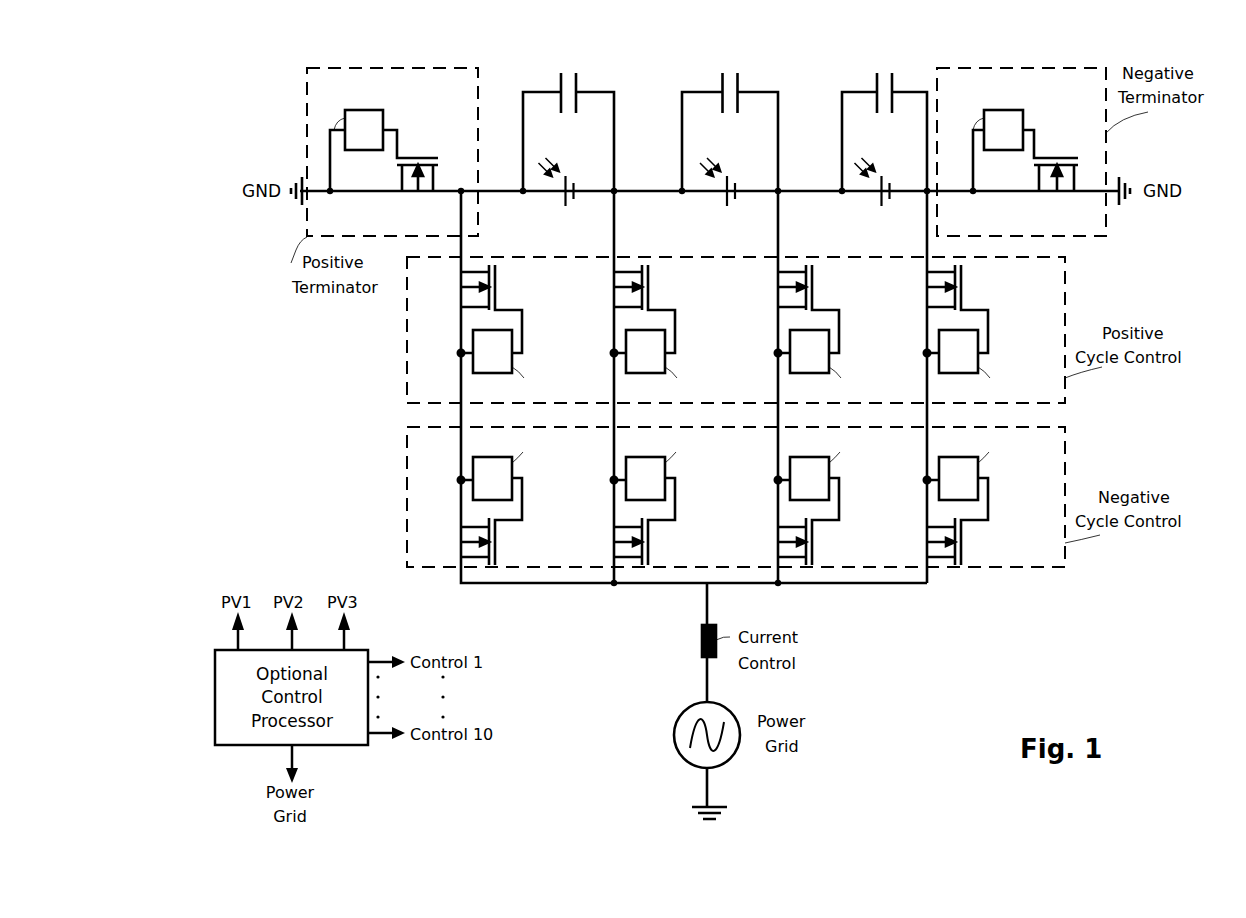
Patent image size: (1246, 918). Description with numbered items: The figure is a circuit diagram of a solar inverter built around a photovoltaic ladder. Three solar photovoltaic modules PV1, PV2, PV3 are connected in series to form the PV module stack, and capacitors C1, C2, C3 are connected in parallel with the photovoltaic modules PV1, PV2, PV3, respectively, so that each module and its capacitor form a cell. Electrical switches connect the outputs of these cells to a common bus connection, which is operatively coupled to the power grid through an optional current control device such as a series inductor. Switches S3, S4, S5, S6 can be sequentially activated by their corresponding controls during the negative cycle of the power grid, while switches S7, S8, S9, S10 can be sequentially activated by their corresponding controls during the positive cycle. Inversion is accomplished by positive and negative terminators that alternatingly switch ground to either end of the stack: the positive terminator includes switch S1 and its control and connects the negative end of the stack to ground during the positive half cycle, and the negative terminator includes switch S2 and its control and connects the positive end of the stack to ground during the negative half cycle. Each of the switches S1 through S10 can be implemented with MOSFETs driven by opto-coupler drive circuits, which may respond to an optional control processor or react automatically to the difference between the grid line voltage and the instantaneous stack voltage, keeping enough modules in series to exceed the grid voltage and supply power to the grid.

The capacitor C1 is at (568, 116).
The capacitor C2 is at (730, 116).
The capacitor C3 is at (884, 116).
The solar photovoltaic module PV1 is at (561, 196).
The solar photovoltaic module PV2 is at (722, 196).
The solar photovoltaic module PV3 is at (877, 196).
The switch S1 is at (380, 156).
The switch S2 is at (1020, 156).
The switch S3 is at (480, 500).
The switch S4 is at (633, 500).
The switch S5 is at (797, 500).
The switch S6 is at (946, 500).
The switch S7 is at (480, 331).
The switch S8 is at (633, 331).
The switch S9 is at (797, 331).
The switch S10 is at (951, 331).